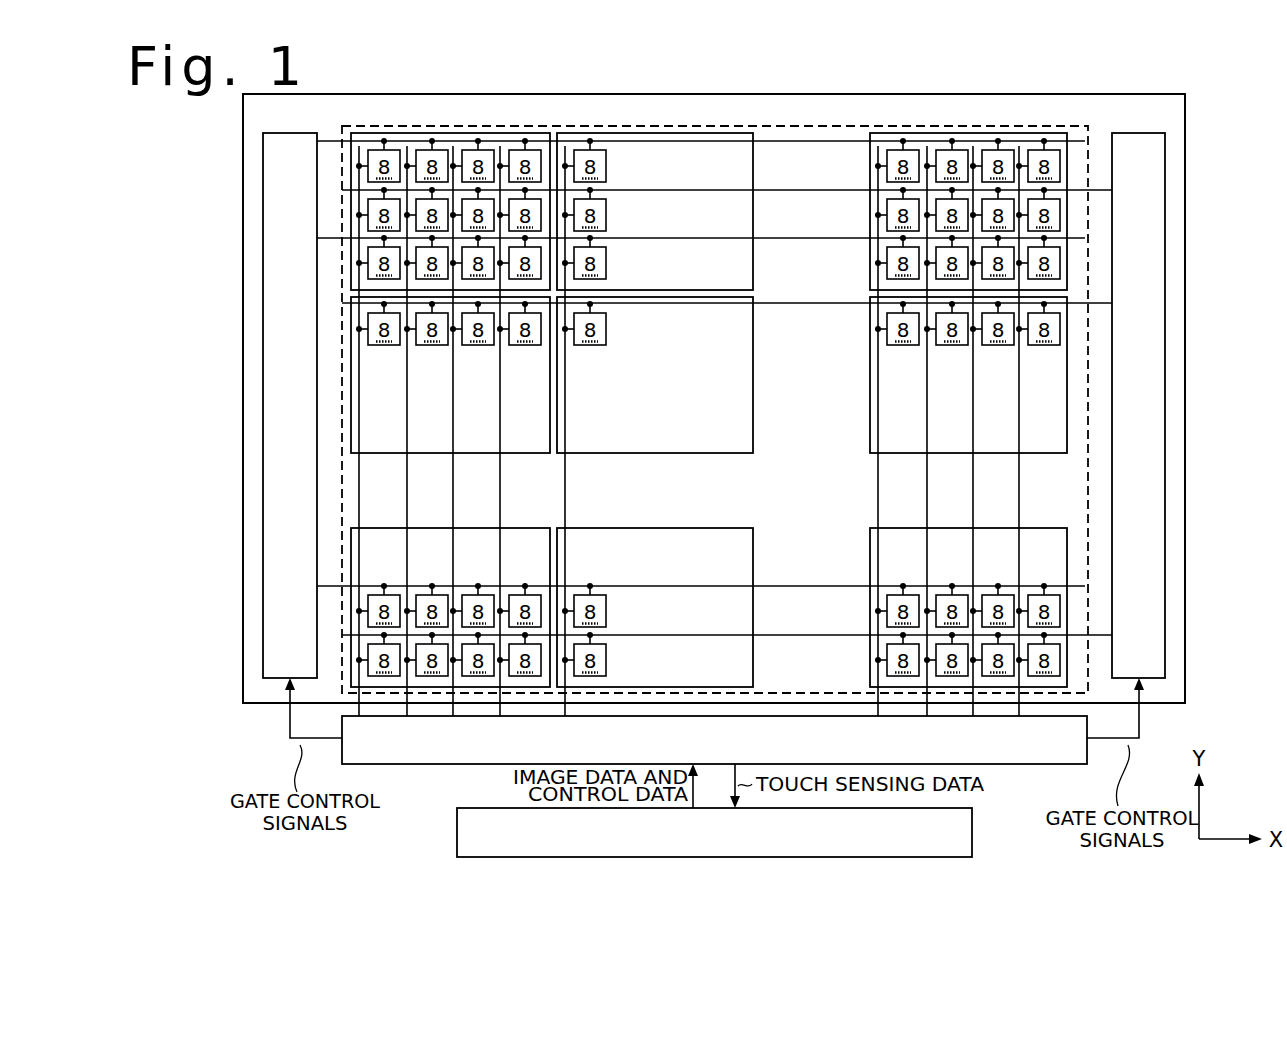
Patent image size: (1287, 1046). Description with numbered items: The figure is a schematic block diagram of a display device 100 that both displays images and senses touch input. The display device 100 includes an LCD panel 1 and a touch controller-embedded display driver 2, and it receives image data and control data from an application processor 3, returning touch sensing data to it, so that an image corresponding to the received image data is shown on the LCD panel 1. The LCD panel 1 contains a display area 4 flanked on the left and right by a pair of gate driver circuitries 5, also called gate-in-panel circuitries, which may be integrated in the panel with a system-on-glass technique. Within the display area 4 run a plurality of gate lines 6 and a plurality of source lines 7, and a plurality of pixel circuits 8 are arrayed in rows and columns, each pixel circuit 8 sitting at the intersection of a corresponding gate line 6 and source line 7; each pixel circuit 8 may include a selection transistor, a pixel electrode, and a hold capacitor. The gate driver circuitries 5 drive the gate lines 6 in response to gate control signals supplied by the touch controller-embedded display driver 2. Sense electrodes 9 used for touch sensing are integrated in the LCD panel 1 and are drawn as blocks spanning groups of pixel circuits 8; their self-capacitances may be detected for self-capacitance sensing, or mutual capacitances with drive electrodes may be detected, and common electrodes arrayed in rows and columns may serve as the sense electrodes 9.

The display device 100 is at (1225, 127).
The LCD panel 1 is at (1185, 113).
The touch controller-embedded display driver 2 is at (1087, 755).
The application processor 3 is at (972, 832).
The display area 4 is at (1090, 133).
The gate driver circuitries 5 is at (296, 133).
The gate lines 6 is at (806, 142).
The source lines 7 is at (362, 497).
The pixel circuits 8 is at (708, 407).
The sense electrodes 9 is at (532, 133).